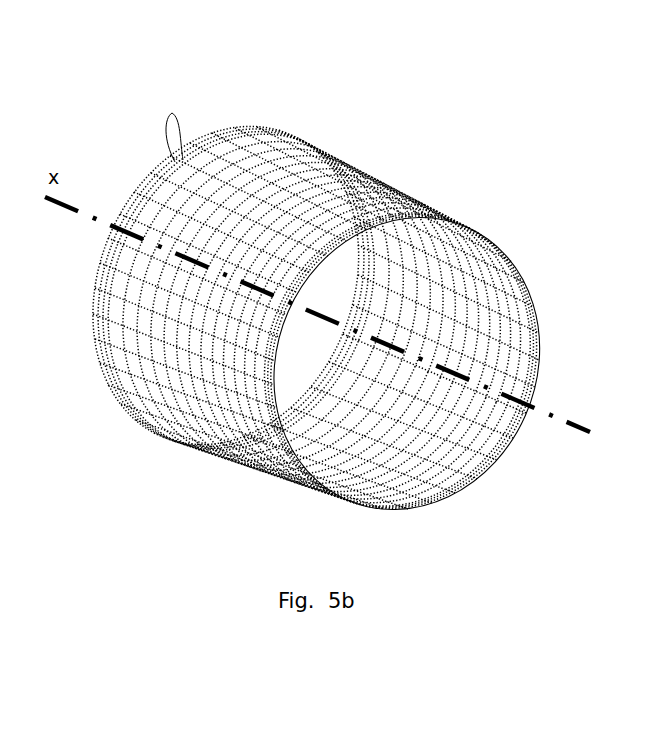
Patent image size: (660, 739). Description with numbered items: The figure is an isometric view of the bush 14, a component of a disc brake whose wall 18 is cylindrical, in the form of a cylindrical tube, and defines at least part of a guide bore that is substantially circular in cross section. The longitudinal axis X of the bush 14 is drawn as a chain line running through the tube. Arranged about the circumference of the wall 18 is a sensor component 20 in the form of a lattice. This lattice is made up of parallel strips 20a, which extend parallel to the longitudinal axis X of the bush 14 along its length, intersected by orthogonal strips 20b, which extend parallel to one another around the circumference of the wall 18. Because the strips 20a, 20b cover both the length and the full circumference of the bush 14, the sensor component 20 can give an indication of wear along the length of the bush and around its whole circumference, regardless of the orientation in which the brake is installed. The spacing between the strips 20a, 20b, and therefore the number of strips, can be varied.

The bush 14 is at (507, 83).
The wall 18 is at (492, 453).
The sensor component 20 is at (483, 345).
The parallel strips 20a is at (183, 368).
The orthogonal strips 20b is at (482, 373).